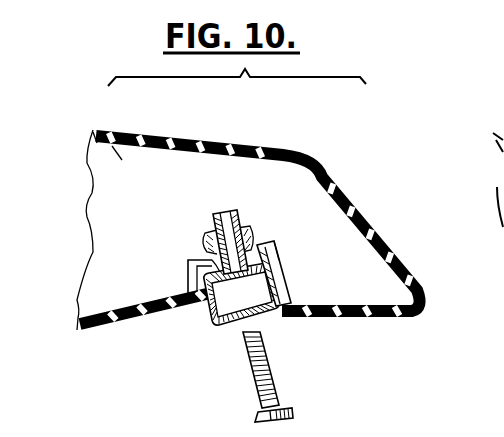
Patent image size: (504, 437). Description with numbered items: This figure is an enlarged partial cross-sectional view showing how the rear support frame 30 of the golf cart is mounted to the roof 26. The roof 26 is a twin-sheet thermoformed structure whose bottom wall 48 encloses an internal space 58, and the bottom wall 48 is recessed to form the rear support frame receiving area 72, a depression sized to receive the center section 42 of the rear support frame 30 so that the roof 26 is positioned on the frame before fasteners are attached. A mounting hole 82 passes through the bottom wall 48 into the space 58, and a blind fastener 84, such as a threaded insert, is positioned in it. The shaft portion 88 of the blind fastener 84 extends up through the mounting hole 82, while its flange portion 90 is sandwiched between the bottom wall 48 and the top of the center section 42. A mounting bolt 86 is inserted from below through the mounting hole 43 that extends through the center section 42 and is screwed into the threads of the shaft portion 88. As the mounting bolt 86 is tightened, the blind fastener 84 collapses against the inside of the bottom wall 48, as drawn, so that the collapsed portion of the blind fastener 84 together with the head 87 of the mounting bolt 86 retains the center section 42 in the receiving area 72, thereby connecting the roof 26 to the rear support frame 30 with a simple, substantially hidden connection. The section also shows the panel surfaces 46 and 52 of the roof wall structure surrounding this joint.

The roof 26 is at (432, 273).
The rear support frame 30 is at (282, 282).
The center section 42 is at (208, 324).
The mounting hole 43 is at (250, 318).
The panel wall 46 is at (275, 149).
The bottom wall 48 is at (91, 346).
The panel side wall 52 is at (350, 188).
The space 58 is at (110, 137).
The rear support frame receiving area 72 is at (274, 257).
The mounting hole 82 is at (188, 258).
The blind fastener 84 is at (238, 219).
The mounting bolt 86 is at (272, 380).
The head 87 is at (292, 417).
The shaft portion 88 is at (205, 225).
The flange portion 90 is at (188, 267).